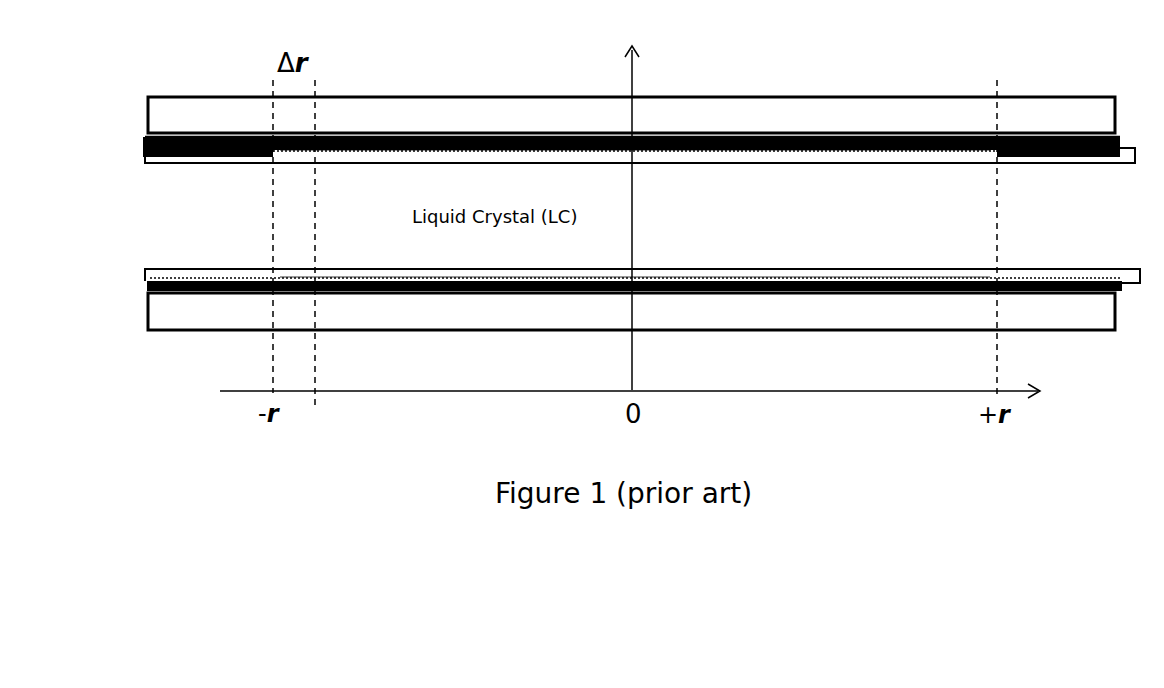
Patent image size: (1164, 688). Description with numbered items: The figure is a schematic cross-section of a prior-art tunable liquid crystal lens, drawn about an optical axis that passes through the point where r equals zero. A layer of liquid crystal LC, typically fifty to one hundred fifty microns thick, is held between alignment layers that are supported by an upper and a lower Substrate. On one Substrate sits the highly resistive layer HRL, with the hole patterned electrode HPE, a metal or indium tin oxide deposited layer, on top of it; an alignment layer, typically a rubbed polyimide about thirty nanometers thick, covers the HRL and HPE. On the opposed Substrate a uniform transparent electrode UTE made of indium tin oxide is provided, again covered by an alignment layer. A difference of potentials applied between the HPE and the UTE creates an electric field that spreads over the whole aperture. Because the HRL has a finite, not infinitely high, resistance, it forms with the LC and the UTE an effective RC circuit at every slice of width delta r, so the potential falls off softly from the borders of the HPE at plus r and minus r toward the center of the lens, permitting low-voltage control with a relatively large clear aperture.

The highly resistive layer HRL is at (146, 137).
The hole patterned electrode HPE is at (146, 158).
The uniform transparent electrode UTE is at (145, 284).
The substrate Substrate is at (631, 213).
The liquid crystal LC is at (731, 168).